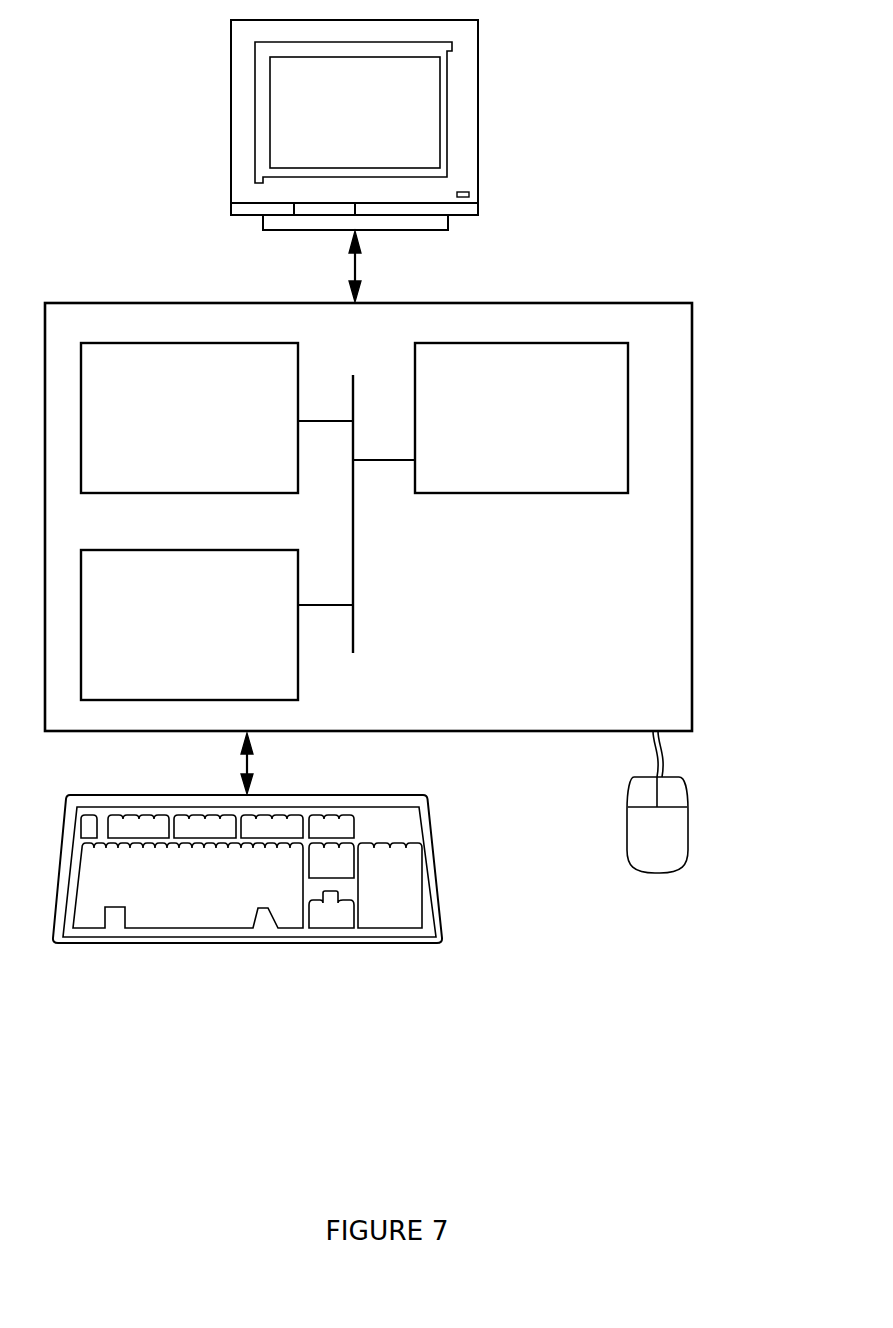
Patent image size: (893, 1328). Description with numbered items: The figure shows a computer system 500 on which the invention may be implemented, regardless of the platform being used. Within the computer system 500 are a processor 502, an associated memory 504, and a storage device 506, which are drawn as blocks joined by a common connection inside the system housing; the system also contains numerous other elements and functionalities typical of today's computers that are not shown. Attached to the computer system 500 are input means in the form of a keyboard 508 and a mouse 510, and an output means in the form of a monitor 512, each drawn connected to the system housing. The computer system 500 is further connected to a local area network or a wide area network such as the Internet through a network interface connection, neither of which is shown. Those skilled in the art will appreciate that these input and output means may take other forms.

The computer system 500 is at (712, 163).
The processor 502 is at (517, 429).
The memory 504 is at (169, 428).
The storage device 506 is at (166, 636).
The keyboard 508 is at (162, 907).
The mouse 510 is at (676, 846).
The monitor 512 is at (374, 129).